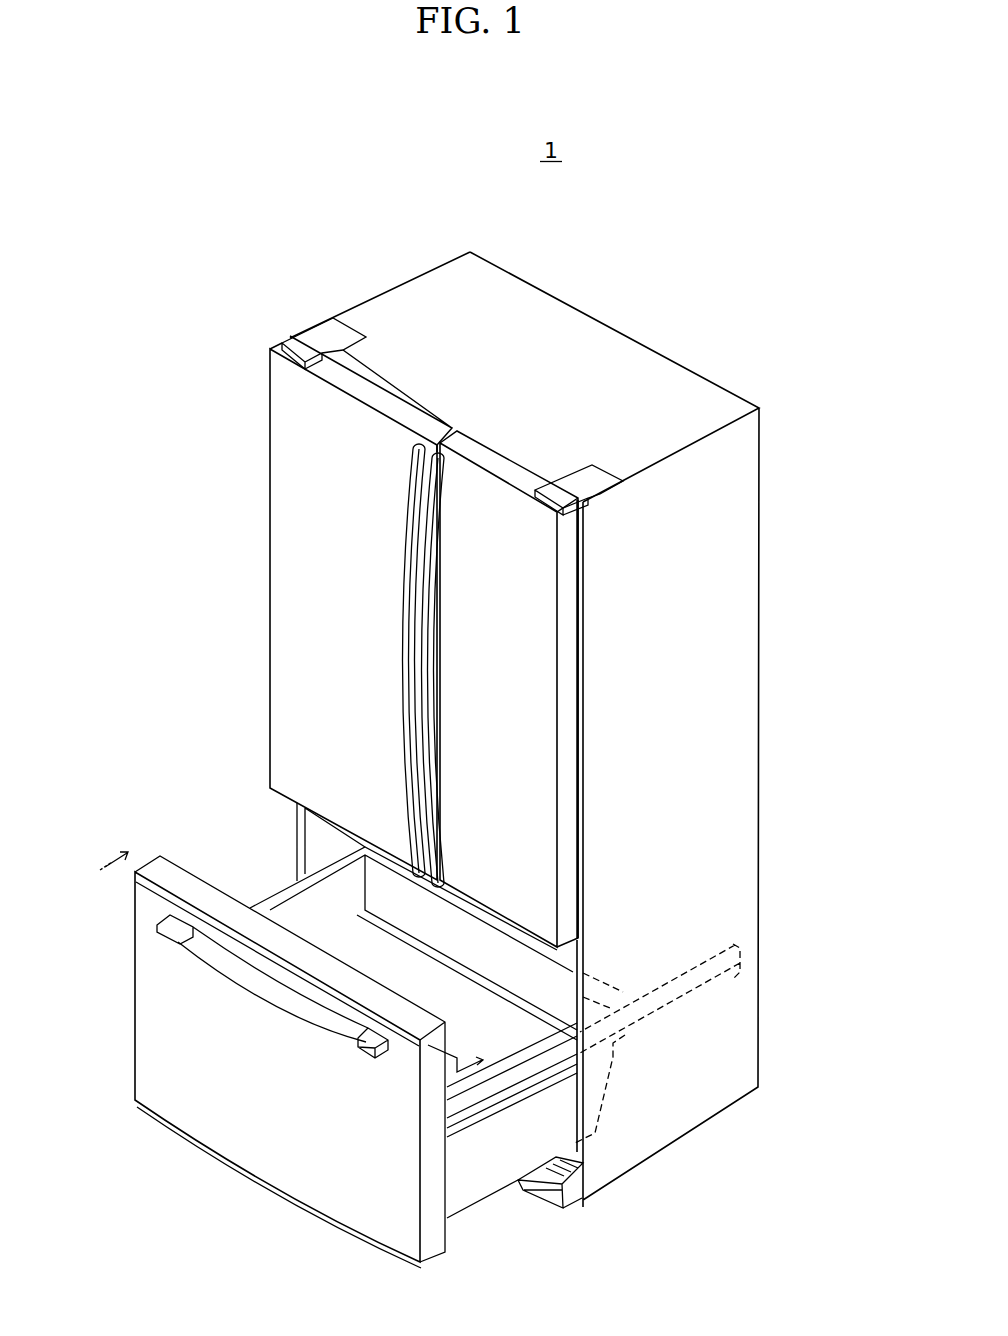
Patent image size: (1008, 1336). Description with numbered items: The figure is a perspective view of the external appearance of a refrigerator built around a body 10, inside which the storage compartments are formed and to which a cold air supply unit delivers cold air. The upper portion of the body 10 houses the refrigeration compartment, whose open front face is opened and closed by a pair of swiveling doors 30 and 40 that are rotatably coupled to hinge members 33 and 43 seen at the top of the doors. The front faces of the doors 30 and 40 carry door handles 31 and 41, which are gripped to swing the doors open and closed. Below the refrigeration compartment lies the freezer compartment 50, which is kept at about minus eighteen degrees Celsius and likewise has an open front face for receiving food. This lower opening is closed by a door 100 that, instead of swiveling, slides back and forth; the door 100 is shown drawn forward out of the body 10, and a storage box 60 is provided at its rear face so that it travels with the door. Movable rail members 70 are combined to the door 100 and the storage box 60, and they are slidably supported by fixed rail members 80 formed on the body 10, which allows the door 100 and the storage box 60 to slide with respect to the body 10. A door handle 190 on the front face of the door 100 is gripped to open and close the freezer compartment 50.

The body 10 is at (694, 386).
The swiveling door 30 is at (284, 576).
The door handle 31 is at (410, 515).
The hinge member 33 is at (315, 333).
The swiveling door 40 is at (507, 630).
The door handle 41 is at (430, 557).
The hinge member 43 is at (597, 483).
The freezer compartment 50 is at (368, 947).
The storage box 60 is at (530, 1146).
The movable rail member 70 is at (528, 1083).
The fixed rail member 80 is at (703, 983).
The door 100 is at (150, 1023).
The door handle 190 is at (189, 947).